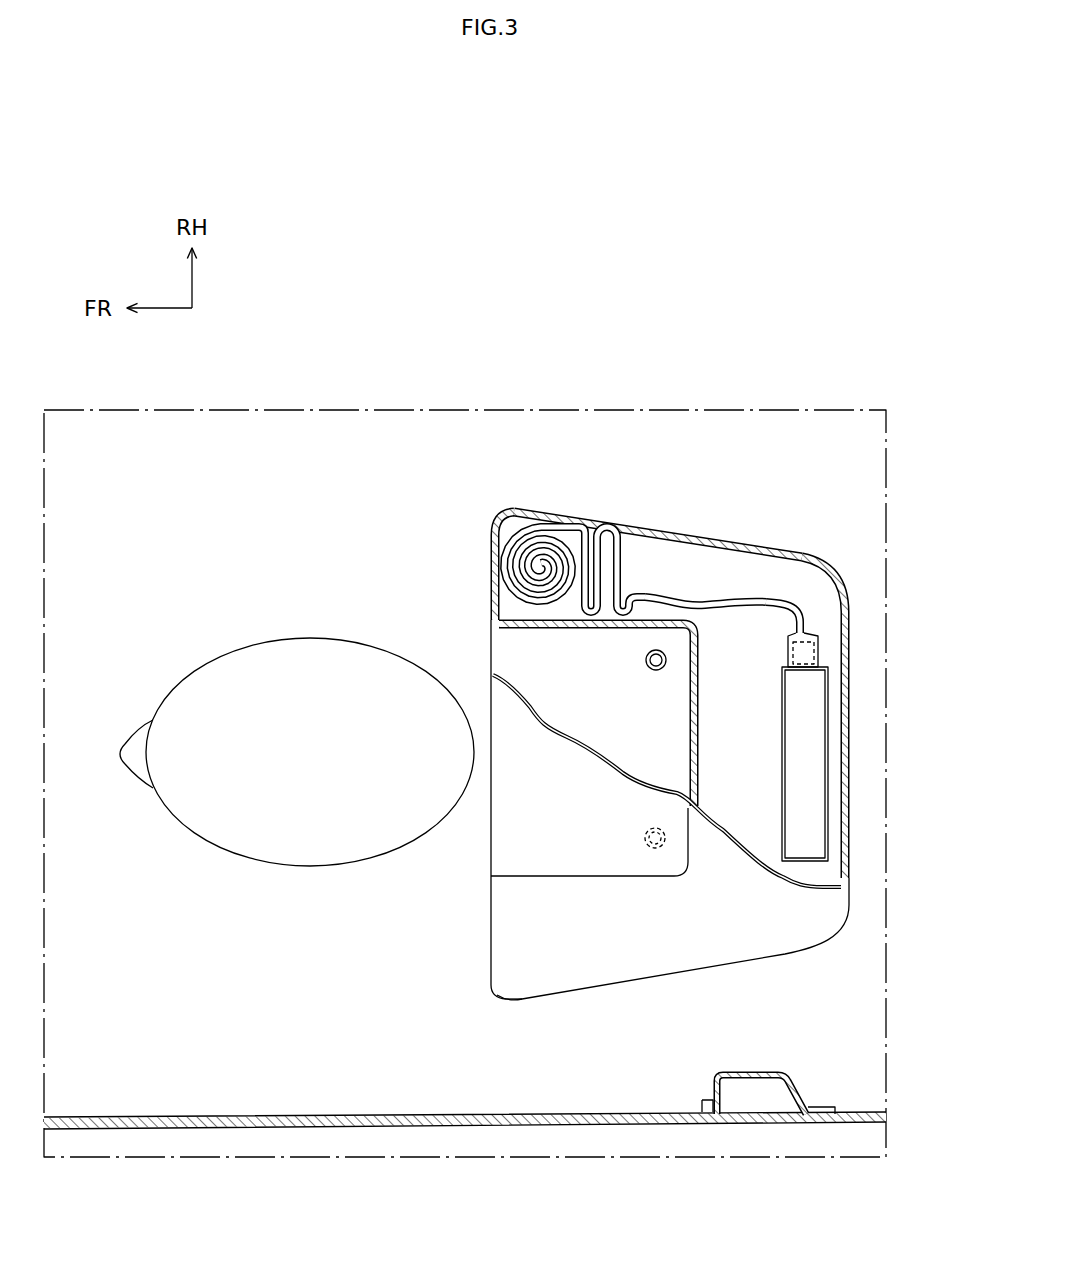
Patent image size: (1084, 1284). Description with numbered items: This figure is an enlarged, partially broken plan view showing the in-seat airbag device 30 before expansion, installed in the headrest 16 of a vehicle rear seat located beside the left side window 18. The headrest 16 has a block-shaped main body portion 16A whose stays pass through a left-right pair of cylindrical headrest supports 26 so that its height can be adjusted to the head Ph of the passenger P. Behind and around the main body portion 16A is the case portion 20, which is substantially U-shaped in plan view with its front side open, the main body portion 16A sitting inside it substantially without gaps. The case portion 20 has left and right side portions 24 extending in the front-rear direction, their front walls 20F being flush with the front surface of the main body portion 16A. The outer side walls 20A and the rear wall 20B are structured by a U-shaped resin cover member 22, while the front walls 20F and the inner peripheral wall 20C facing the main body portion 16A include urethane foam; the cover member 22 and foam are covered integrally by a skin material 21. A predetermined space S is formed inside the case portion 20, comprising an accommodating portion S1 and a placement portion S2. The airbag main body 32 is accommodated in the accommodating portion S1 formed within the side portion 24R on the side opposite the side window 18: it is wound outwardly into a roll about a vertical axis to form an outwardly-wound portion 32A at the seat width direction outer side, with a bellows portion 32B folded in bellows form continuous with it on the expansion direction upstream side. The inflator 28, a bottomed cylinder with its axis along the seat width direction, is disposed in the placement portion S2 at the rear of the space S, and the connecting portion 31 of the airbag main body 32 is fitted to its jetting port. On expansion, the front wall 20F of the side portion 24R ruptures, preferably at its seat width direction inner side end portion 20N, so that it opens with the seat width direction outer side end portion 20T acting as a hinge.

The side window 18 is at (284, 1117).
The passenger P is at (283, 870).
The head Ph is at (330, 847).
The case portion 20 is at (845, 934).
The outer side wall 20A is at (667, 508).
The rear wall 20B is at (851, 710).
The inner peripheral wall 20C is at (698, 682).
The front wall 20F is at (490, 575).
The seat width direction inner side end portion 20N is at (490, 628).
The seat width direction outer side end portion 20T is at (490, 524).
The skin material 21 is at (520, 958).
The cover member 22 is at (853, 600).
The side portion 24 is at (488, 998).
The side portion 24R is at (492, 506).
The headrest support 26 is at (645, 666).
The inflator 28 is at (808, 773).
The in-seat airbag device 30 is at (803, 599).
The connecting portion 31 is at (828, 656).
The airbag main body 32 is at (690, 600).
The outwardly-wound portion 32A is at (543, 532).
The bellows portion 32B is at (645, 532).
The headrest 16 is at (490, 860).
The main body portion 16A is at (552, 878).
The space S is at (742, 720).
The accommodating portion S1 is at (656, 566).
The placement portion S2 is at (766, 830).